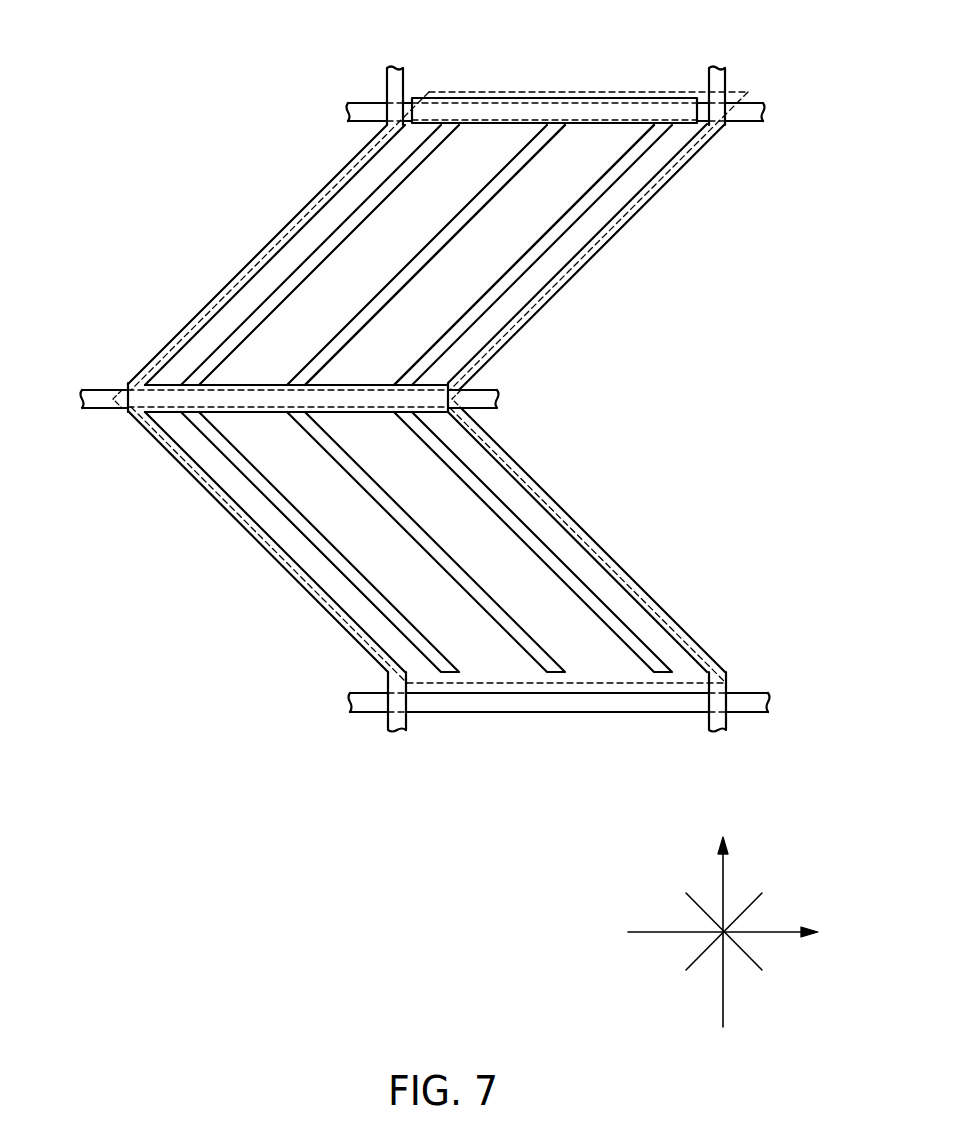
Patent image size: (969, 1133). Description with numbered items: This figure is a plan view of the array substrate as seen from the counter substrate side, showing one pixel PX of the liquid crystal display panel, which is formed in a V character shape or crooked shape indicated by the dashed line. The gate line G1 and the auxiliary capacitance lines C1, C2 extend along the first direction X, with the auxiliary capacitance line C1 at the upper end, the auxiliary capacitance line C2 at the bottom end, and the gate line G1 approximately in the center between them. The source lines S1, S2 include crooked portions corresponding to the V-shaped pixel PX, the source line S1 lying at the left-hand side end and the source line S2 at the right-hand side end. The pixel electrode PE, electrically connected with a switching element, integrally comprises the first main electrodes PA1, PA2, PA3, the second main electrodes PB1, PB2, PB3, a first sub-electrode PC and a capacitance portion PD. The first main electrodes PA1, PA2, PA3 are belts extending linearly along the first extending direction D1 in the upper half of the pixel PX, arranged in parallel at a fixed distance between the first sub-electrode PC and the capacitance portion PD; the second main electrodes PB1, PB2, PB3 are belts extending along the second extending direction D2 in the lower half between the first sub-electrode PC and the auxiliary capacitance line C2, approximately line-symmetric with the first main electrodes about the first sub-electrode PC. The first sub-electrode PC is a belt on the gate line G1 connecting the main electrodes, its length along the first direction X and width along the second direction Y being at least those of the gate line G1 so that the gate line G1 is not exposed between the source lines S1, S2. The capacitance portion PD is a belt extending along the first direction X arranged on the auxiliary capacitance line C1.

The source line S1 is at (393, 68).
The source line S2 is at (718, 68).
The gate line G1 is at (82, 398).
The auxiliary capacitance line C1 is at (348, 112).
The auxiliary capacitance line C2 is at (350, 703).
The pixel PX is at (552, 84).
The pixel electrode PE is at (612, 204).
The first sub-electrode PC is at (376, 385).
The capacitance portion PD is at (593, 128).
The first main electrode PA1 is at (395, 190).
The first main electrode PA2 is at (475, 217).
The first main electrode PA3 is at (558, 237).
The second main electrode PB1 is at (332, 545).
The second main electrode PB2 is at (418, 525).
The second main electrode PB3 is at (505, 495).
The first extending direction D1 is at (753, 897).
The second extending direction D2 is at (753, 967).
The first direction X is at (732, 933).
The second direction Y is at (722, 919).